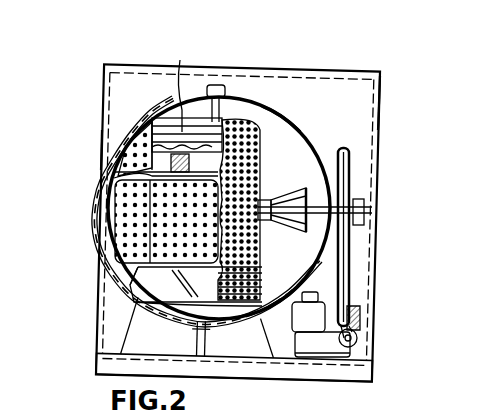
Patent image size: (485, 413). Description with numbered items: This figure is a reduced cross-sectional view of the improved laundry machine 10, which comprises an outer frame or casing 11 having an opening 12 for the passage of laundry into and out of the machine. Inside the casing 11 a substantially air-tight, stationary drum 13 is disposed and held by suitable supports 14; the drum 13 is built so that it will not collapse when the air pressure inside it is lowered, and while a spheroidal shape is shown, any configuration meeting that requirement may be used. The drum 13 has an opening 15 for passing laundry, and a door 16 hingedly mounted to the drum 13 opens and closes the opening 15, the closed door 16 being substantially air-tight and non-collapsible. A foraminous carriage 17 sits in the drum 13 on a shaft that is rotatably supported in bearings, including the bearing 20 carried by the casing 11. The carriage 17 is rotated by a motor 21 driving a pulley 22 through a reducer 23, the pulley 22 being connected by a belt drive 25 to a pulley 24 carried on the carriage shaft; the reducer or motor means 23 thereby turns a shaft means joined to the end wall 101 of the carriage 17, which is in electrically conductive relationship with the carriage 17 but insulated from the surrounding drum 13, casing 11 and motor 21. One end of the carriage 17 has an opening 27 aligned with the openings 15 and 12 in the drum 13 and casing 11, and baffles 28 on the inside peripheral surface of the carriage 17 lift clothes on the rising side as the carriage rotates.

The laundry machine 10 is at (378, 62).
The outer frame or casing 11 is at (377, 114).
The opening 12 is at (101, 148).
The stationary drum 13 is at (271, 114).
The end wall 101 is at (276, 145).
The supports 14 is at (236, 350).
The opening 15 is at (92, 199).
The door 16 is at (96, 215).
The foraminous carriage 17 is at (180, 80).
The bearing 20 is at (366, 212).
The motor 21 is at (358, 339).
The pulley 22 is at (352, 308).
The reducer 23 is at (314, 334).
The pulley 24 is at (350, 188).
The belt drive 25 is at (350, 268).
The opening 27 is at (114, 176).
The baffles 28 is at (166, 118).